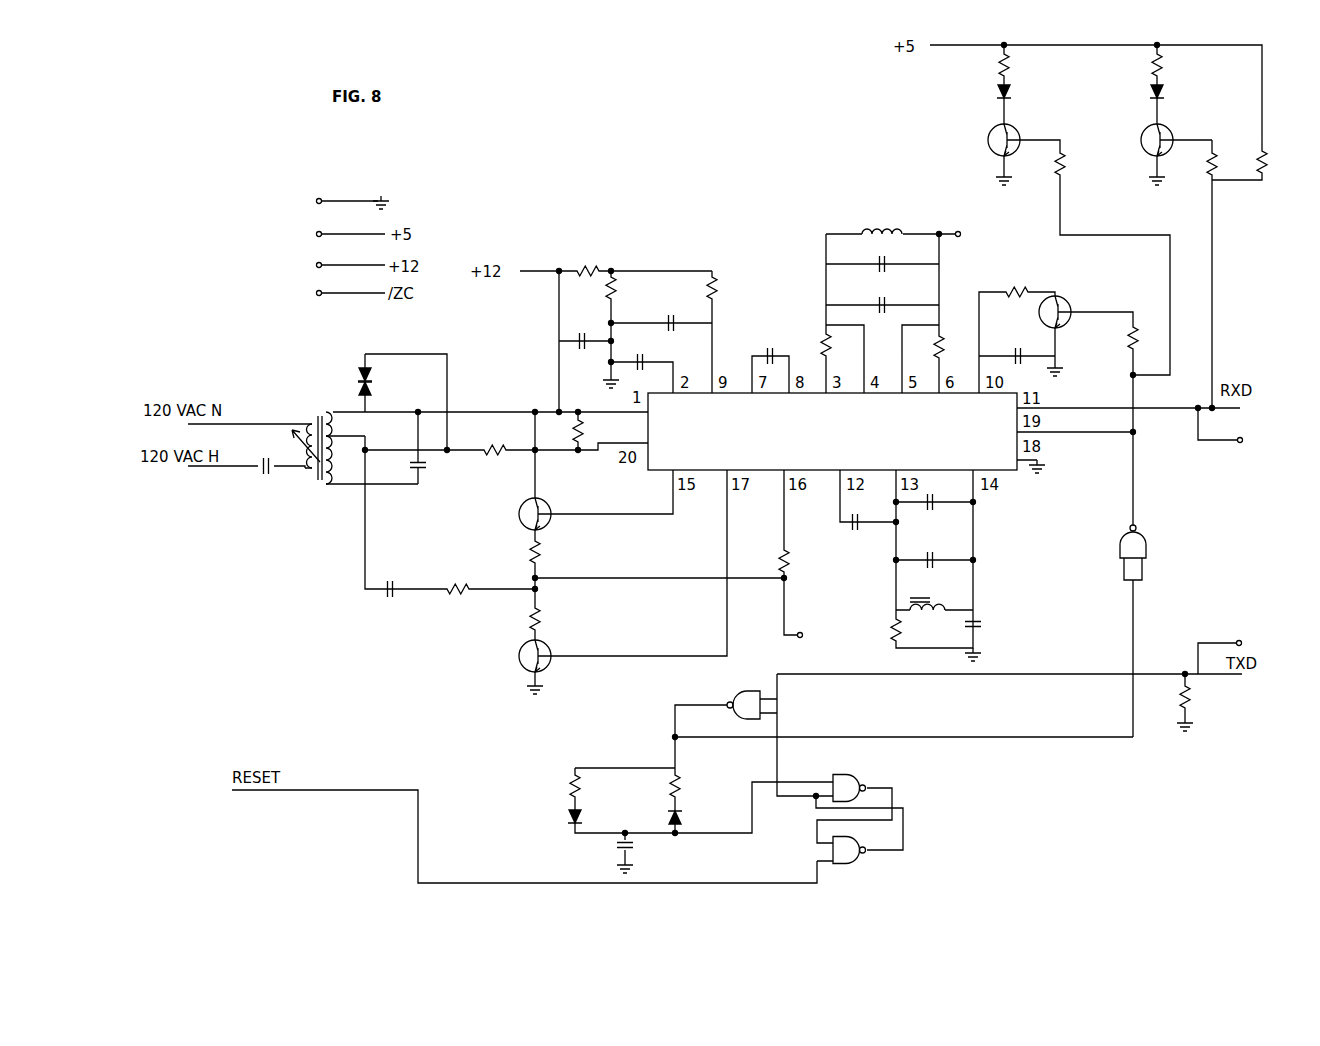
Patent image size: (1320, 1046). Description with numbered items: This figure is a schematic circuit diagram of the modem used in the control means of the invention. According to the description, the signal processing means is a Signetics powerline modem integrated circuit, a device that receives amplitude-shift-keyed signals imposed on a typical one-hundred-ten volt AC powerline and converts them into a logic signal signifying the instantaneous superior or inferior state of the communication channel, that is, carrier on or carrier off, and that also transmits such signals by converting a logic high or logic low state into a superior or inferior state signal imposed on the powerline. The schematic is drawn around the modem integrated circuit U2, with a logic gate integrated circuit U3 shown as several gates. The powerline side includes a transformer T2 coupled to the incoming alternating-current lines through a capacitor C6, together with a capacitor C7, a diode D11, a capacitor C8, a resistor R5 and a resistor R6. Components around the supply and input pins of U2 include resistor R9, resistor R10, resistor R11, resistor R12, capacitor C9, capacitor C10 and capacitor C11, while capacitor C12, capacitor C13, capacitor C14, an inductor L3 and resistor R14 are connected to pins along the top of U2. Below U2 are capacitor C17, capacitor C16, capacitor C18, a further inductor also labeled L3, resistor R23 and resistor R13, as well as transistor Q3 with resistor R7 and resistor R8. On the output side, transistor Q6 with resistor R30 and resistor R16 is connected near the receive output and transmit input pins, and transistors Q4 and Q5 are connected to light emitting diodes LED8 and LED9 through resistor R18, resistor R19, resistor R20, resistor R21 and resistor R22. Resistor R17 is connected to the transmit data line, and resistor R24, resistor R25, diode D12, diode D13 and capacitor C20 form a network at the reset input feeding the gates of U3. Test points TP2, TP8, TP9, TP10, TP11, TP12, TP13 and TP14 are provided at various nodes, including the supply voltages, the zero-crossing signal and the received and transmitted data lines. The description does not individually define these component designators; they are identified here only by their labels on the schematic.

The transformer T2 is at (318, 434).
The capacitor C6 is at (268, 457).
The capacitor C7 is at (433, 470).
The capacitor C8 is at (390, 579).
The capacitor C9 is at (670, 313).
The capacitor C10 is at (583, 332).
The capacitor C11 is at (642, 354).
The capacitor C12 is at (767, 346).
The capacitor C13 is at (881, 257).
The capacitor C14 is at (881, 298).
The capacitor C16 is at (933, 513).
The capacitor C17 is at (860, 514).
The capacitor C18 is at (933, 571).
The electrolytic capacitor C20 is at (640, 848).
The transient suppressor diode D11 is at (387, 382).
The diode D12 is at (593, 818).
The diode D13 is at (694, 818).
The inductor L3 is at (903, 420).
The resistor R5 is at (458, 577).
The resistor R6 is at (491, 438).
The resistor R7 is at (549, 552).
The resistor R8 is at (548, 619).
The resistor R9 is at (589, 431).
The resistor R10 is at (588, 257).
The resistor R11 is at (627, 288).
The resistor R12 is at (728, 288).
The resistor R13 is at (803, 561).
The resistor R14 is at (841, 351).
The resistor R16 is at (1117, 338).
The resistor R17 is at (1203, 697).
The resistor R18 is at (1021, 65).
The resistor R19 is at (1077, 164).
The resistor R20 is at (1174, 65).
The resistor R21 is at (1227, 164).
The resistor R22 is at (1279, 162).
The resistor R23 is at (878, 640).
The resistor R24 is at (592, 786).
The resistor R25 is at (693, 786).
The resistor R30 is at (1017, 280).
The transistor Q3 is at (552, 651).
The transistor Q4 is at (1017, 133).
The transistor Q5 is at (1170, 133).
The transistor Q6 is at (1066, 301).
The light emitting diode LED8 is at (1182, 94).
The light emitting diode LED9 is at (1029, 94).
The power line transceiver integrated circuit U2 is at (832, 431).
The NAND gate integrated circuit U3 is at (942, 702).
The test point TP2 is at (978, 235).
The test point TP8 is at (817, 636).
The test point TP9 is at (328, 212).
The test point TP10 is at (332, 243).
The test point TP11 is at (332, 275).
The test point TP12 is at (1262, 441).
The test point TP13 is at (1260, 645).
The test point TP14 is at (332, 303).